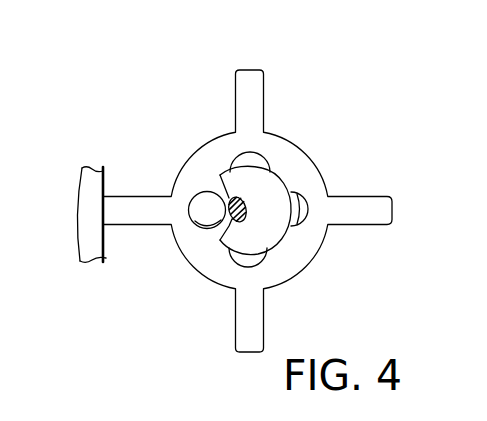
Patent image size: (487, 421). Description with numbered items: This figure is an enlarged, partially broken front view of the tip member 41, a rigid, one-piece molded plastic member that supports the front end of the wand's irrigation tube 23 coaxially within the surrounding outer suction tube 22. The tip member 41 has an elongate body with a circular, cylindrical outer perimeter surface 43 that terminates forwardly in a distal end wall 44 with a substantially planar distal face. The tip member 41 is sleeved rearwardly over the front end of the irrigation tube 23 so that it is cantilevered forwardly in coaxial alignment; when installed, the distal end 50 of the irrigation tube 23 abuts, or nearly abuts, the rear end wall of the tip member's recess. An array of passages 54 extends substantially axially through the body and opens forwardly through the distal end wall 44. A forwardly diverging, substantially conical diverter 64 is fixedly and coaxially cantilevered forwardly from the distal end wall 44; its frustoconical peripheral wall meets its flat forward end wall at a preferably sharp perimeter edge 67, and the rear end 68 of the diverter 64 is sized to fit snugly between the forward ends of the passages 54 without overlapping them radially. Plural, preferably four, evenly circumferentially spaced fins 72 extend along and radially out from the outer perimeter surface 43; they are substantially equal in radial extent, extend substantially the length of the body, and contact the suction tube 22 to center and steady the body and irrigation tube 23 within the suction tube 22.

The suction tube 22 is at (98, 178).
The irrigation tube 23 is at (193, 198).
The tip member 41 is at (333, 112).
The outer perimeter surface 43 is at (317, 160).
The distal end wall 44 is at (288, 170).
The distal end 50 is at (207, 222).
The passages 54 is at (200, 226).
The diverter 64 is at (272, 231).
The perimeter edge 67 is at (277, 236).
The rear end 68 is at (233, 228).
The fins 72 is at (377, 209).